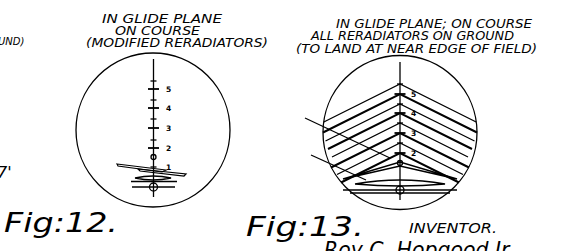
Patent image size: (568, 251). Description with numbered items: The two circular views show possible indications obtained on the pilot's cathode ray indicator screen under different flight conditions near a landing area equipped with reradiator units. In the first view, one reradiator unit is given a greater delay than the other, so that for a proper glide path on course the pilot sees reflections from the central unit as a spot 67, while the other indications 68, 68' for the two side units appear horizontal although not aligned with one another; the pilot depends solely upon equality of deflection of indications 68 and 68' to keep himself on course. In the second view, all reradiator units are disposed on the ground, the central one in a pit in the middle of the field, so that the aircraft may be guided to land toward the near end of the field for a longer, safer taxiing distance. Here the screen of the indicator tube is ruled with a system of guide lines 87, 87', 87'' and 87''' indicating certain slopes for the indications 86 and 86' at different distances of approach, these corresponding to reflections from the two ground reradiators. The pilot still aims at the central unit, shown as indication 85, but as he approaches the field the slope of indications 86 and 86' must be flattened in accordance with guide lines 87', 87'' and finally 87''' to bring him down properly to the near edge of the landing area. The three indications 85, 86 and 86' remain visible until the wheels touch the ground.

In FIG. 12, the spot 67 is at (151, 157).
In FIG. 12, the indication 68 is at (130, 158).
In FIG. 12, the indication 68' is at (177, 158).
In FIG. 13, the indication 85 is at (339, 131).
In FIG. 13, the indication 86 is at (325, 161).
In FIG. 13, the guide line 87 is at (424, 133).
In FIG. 13, the indication 86' is at (429, 166).
In FIG. 13, the guide line 87' is at (433, 179).
In FIG. 13, the guide line 87'' is at (428, 193).
In FIG. 13, the guide line 87''' is at (414, 205).